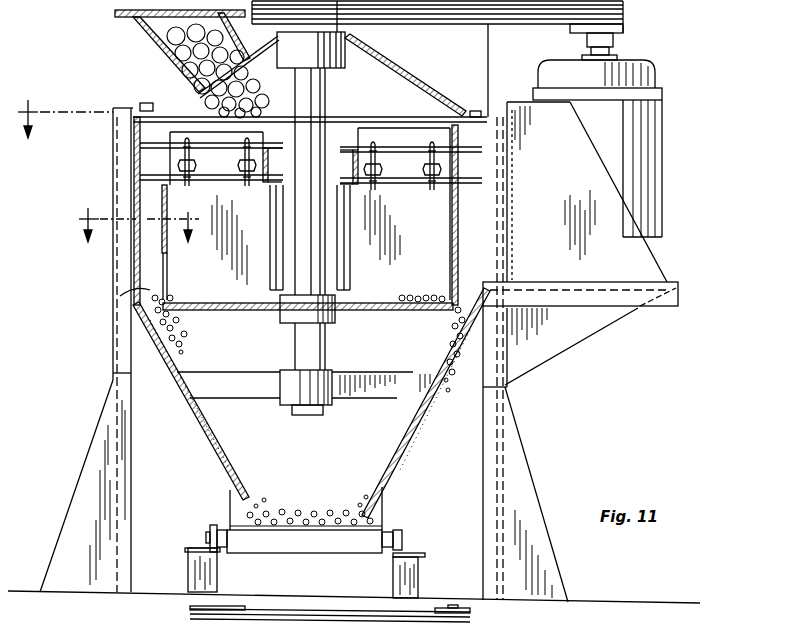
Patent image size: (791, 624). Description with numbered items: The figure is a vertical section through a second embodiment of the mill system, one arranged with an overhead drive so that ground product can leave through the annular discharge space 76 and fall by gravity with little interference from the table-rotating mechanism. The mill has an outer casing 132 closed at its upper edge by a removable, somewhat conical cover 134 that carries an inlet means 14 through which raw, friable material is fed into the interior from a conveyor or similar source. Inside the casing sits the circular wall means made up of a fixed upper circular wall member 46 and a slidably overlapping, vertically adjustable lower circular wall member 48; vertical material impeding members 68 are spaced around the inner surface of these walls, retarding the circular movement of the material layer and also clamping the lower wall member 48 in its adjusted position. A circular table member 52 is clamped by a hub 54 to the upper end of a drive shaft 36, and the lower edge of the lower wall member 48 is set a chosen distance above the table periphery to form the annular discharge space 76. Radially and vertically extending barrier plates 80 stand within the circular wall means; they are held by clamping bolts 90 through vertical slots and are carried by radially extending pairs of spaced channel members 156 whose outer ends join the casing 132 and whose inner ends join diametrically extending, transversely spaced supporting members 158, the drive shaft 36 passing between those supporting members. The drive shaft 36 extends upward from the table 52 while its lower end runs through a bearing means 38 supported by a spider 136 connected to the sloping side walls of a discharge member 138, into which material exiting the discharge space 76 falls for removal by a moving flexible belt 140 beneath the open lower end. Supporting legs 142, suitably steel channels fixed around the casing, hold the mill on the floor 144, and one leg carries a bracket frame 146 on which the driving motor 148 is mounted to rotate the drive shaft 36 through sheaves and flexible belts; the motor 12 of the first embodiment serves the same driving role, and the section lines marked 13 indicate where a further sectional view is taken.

The electric motor 12 is at (65, 110).
The section line 13 is at (137, 216).
The inlet means 14 is at (150, 33).
The drive shaft 36 is at (318, 102).
The bearing means 38 is at (335, 372).
The upper circular wall member 46 is at (160, 228).
The lower circular wall member 48 is at (167, 278).
The circular table member 52 is at (406, 312).
The hub 54 is at (335, 318).
The material impeding members 68 is at (278, 198).
The annular discharge space 76 is at (138, 290).
The barrier plates 80 is at (220, 293).
The clamping bolts 90 is at (245, 172).
The outer casing 132 is at (136, 268).
The cover 134 is at (420, 90).
The spider 136 is at (395, 400).
The discharge member 138 is at (420, 426).
The moving flexible belt 140 is at (384, 518).
The supporting legs 142 is at (123, 478).
The floor 144 is at (658, 598).
The bracket frame 146 is at (668, 305).
The driving motor 148 is at (655, 148).
The channel members 156 is at (490, 173).
The supporting members 158 is at (264, 148).